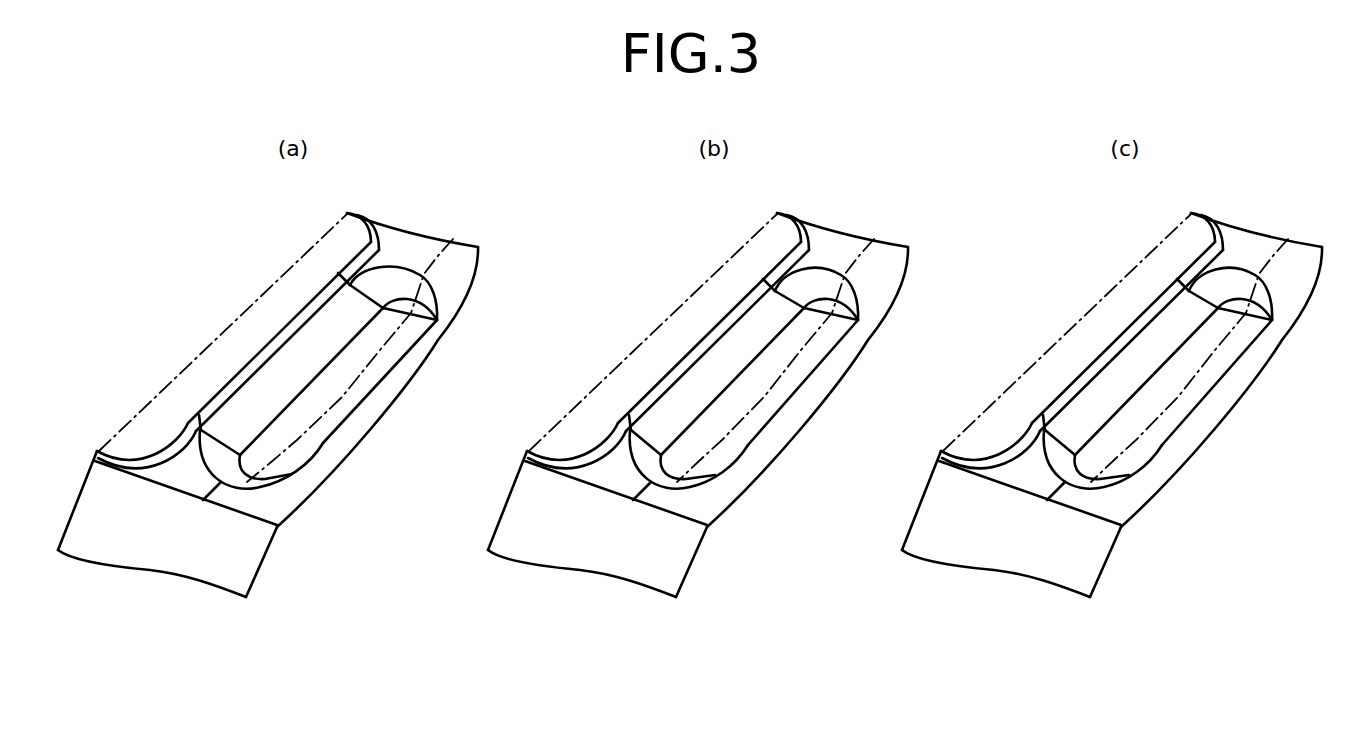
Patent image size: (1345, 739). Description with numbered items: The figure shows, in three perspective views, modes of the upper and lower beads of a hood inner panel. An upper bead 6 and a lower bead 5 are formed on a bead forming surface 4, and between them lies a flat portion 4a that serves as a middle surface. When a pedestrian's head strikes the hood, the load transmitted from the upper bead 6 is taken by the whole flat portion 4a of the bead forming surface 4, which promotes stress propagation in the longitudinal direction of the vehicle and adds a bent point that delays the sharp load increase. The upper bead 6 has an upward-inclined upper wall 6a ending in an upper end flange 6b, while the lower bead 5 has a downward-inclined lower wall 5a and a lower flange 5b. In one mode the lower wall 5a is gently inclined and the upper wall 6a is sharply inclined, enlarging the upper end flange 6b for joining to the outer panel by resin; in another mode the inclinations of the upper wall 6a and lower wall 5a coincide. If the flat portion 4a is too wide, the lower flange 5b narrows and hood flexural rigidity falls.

The bead forming surface 4 is at (173, 478).
The flat portion 4a is at (243, 423).
The lower bead 5 is at (389, 419).
The lower wall 5a is at (243, 388).
The lower flange 5b is at (372, 362).
The upper bead 6 is at (204, 344).
The upper wall 6a is at (185, 426).
The upper end flange 6b is at (280, 303).